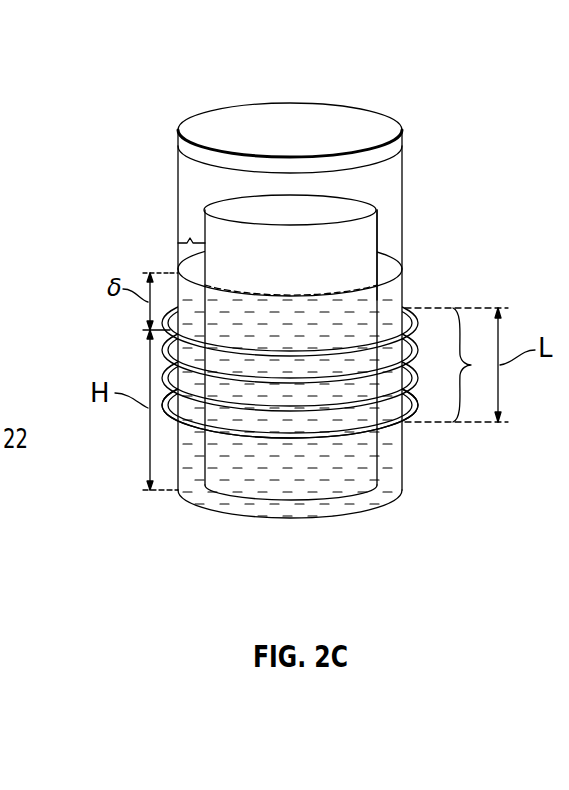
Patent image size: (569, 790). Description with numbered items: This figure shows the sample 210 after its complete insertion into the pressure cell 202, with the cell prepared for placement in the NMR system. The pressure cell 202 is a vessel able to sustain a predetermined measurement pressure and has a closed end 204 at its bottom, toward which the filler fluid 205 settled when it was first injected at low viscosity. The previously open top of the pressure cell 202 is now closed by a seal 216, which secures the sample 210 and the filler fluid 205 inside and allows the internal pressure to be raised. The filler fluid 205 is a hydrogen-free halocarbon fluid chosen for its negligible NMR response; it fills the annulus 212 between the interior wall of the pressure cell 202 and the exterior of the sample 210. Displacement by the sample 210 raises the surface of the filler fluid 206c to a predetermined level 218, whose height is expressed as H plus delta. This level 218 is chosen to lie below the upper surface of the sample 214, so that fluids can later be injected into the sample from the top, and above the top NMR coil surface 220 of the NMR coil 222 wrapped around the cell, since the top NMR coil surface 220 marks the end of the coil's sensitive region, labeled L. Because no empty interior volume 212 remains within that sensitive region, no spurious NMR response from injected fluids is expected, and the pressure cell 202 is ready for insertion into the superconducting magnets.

The pressure cell 202 is at (177, 172).
The closed end 204 is at (292, 521).
The filler fluid 205 is at (185, 487).
The surface of the filler fluid 206c is at (178, 268).
The sample 210 is at (355, 235).
The annulus 212 is at (189, 238).
The upper surface of the sample 214 is at (372, 211).
The seal 216 is at (272, 120).
The predetermined level 218 is at (402, 272).
The top NMR coil surface 220 is at (150, 330).
The NMR coil 222 is at (420, 403).